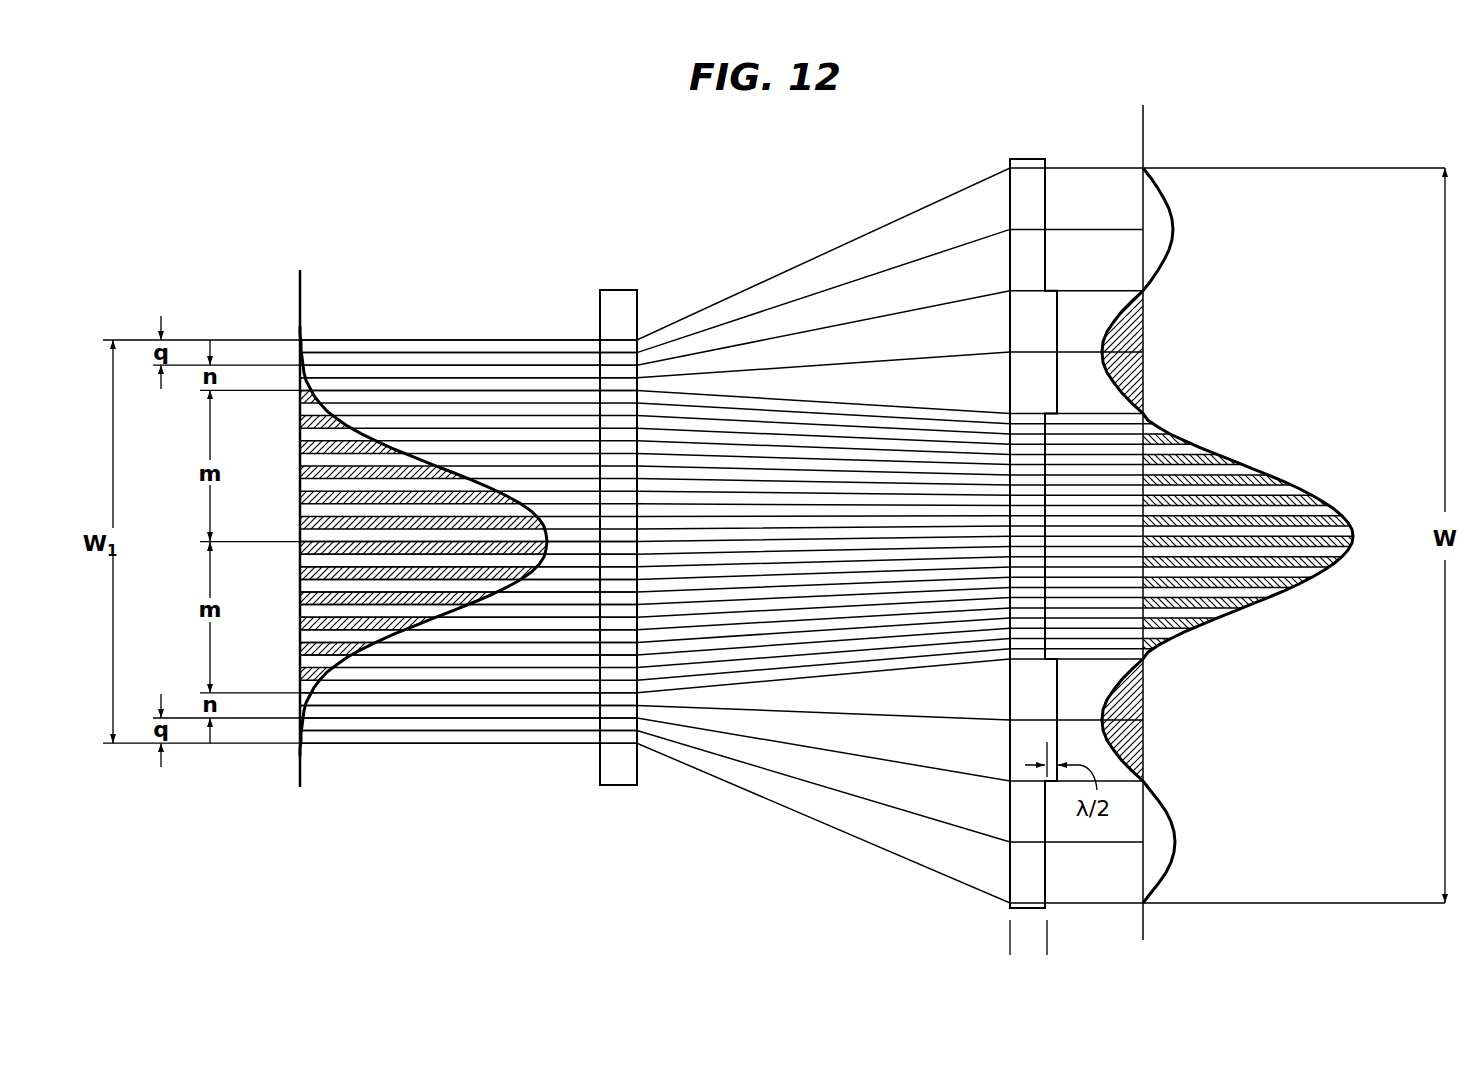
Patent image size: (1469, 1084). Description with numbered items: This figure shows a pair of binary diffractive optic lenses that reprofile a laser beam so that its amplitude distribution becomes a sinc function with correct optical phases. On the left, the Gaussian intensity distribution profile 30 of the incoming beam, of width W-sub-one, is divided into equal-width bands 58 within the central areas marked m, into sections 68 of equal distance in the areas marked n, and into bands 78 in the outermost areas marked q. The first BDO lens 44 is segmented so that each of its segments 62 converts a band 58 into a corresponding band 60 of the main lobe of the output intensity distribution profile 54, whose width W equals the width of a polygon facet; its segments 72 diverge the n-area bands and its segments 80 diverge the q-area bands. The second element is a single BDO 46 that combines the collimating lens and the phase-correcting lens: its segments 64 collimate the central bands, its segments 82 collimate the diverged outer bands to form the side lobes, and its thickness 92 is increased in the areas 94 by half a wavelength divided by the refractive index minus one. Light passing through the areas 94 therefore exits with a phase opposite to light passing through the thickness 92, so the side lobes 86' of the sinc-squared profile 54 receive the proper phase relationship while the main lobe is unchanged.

The Gaussian intensity distribution profile 30 is at (430, 462).
The BDO lens 44 is at (618, 290).
The BDO 46 is at (1027, 158).
The intensity distribution profile 54 is at (1240, 612).
The bands 58 is at (300, 648).
The bands 60 is at (1143, 583).
The segments 62 is at (633, 558).
The segments 64 is at (1012, 542).
The sections 68 is at (300, 380).
The segments 72 is at (637, 378).
The bands 78 is at (300, 355).
The segments 80 is at (600, 357).
The segments 82 is at (1017, 822).
The lobes 86' is at (1122, 535).
The thickness 92 is at (988, 942).
The areas 94 is at (1020, 362).